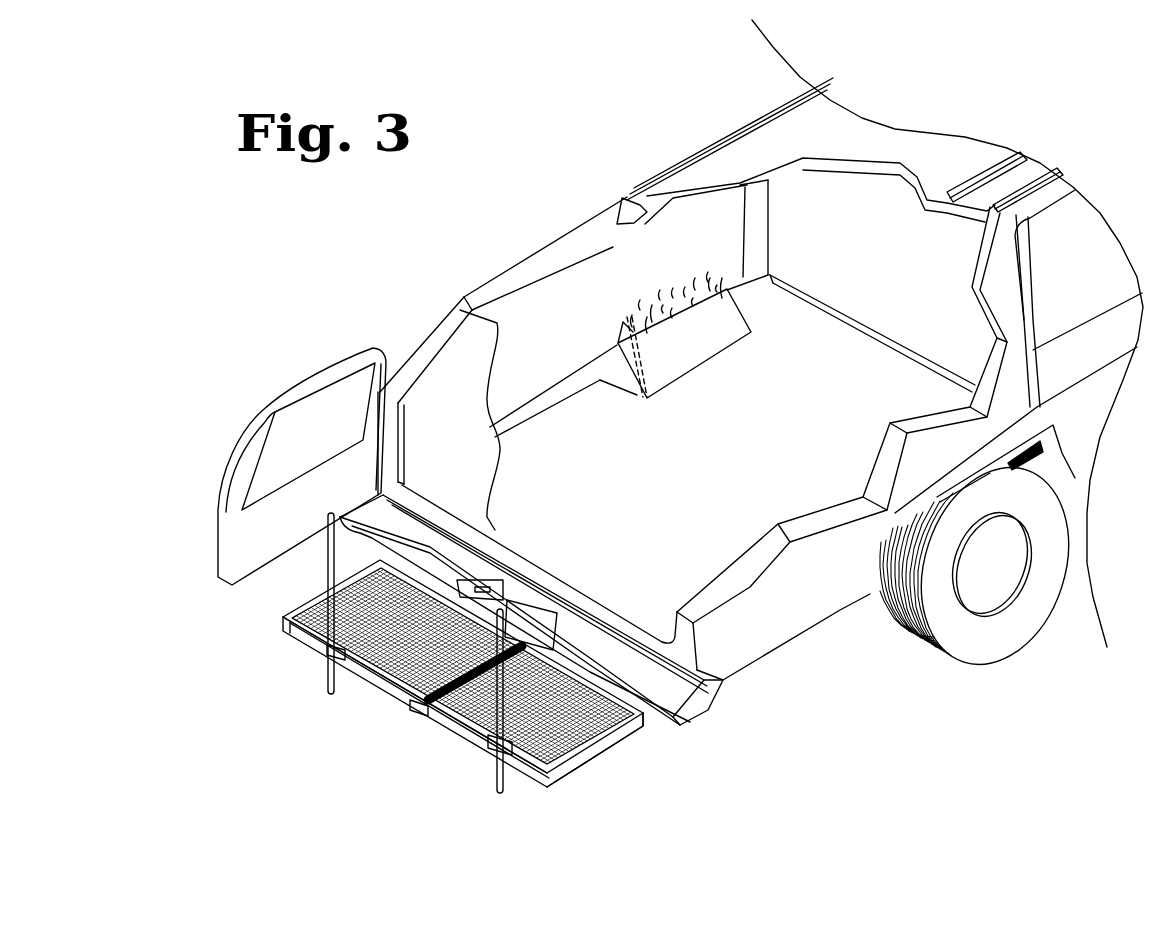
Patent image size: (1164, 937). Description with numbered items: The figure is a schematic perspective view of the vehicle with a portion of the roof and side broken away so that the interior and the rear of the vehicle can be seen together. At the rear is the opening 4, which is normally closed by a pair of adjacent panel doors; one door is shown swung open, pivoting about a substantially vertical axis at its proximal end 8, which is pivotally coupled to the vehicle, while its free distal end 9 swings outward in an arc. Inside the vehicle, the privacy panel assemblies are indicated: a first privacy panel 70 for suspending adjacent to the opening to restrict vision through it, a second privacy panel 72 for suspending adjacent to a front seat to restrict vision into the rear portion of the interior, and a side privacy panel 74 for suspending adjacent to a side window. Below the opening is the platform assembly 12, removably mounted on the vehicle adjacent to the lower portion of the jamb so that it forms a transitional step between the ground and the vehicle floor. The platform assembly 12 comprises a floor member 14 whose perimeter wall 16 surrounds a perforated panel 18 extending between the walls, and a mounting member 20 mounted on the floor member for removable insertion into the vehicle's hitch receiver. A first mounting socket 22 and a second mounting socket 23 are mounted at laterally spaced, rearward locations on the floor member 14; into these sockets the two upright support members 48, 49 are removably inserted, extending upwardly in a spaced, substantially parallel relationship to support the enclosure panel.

The opening 4 is at (421, 352).
The proximal end 8 is at (398, 332).
The free distal end 9 is at (223, 530).
The platform assembly 12 is at (387, 702).
The floor member 14 is at (425, 707).
The perimeter wall 16 is at (287, 620).
The perforated panel 18 is at (625, 712).
The mounting member 20 is at (455, 710).
The first mounting socket 22 is at (327, 650).
The second mounting socket 23 is at (497, 750).
The upright support member 48 is at (320, 563).
The upright support member 49 is at (567, 713).
The first privacy panel 70 is at (487, 468).
The second privacy panel 72 is at (880, 268).
The side privacy panel 74 is at (572, 343).